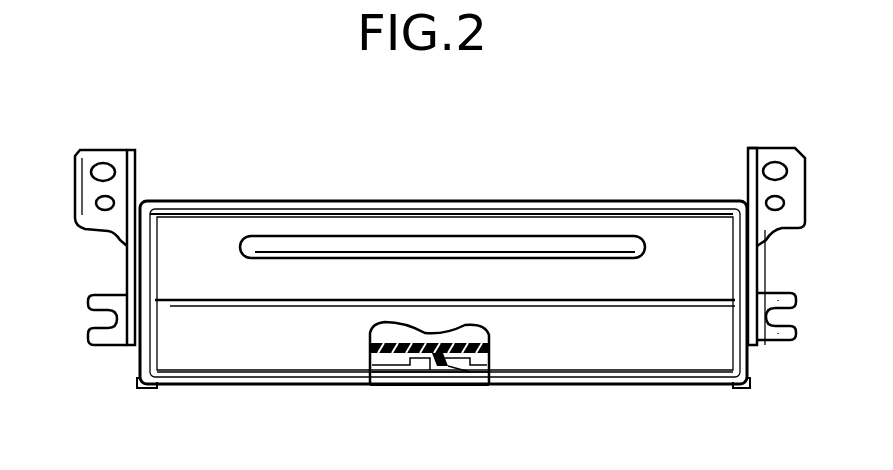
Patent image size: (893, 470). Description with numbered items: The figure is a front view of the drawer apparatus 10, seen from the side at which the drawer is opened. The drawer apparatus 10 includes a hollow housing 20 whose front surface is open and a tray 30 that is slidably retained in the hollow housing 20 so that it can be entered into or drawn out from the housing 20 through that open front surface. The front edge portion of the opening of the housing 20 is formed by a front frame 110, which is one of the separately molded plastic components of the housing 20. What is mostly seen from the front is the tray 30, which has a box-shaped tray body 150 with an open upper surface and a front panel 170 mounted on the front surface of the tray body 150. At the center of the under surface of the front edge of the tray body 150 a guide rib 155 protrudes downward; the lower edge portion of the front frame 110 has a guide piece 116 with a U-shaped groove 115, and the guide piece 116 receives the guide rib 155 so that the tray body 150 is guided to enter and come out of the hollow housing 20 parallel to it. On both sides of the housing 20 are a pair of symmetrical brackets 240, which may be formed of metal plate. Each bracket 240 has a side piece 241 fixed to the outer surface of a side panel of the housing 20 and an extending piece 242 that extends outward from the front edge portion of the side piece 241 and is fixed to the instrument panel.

The drawer apparatus 10 is at (495, 125).
The hollow housing 20 is at (398, 202).
The tray 30 is at (468, 220).
The front frame 110 is at (140, 377).
The U-shaped groove 115 is at (449, 362).
The guide piece 116 is at (428, 372).
The tray body 150 is at (392, 352).
The guide rib 155 is at (450, 368).
The front panel 170 is at (612, 358).
The bracket 240 is at (782, 150).
The side piece 241 is at (140, 226).
The extending piece 242 is at (80, 152).